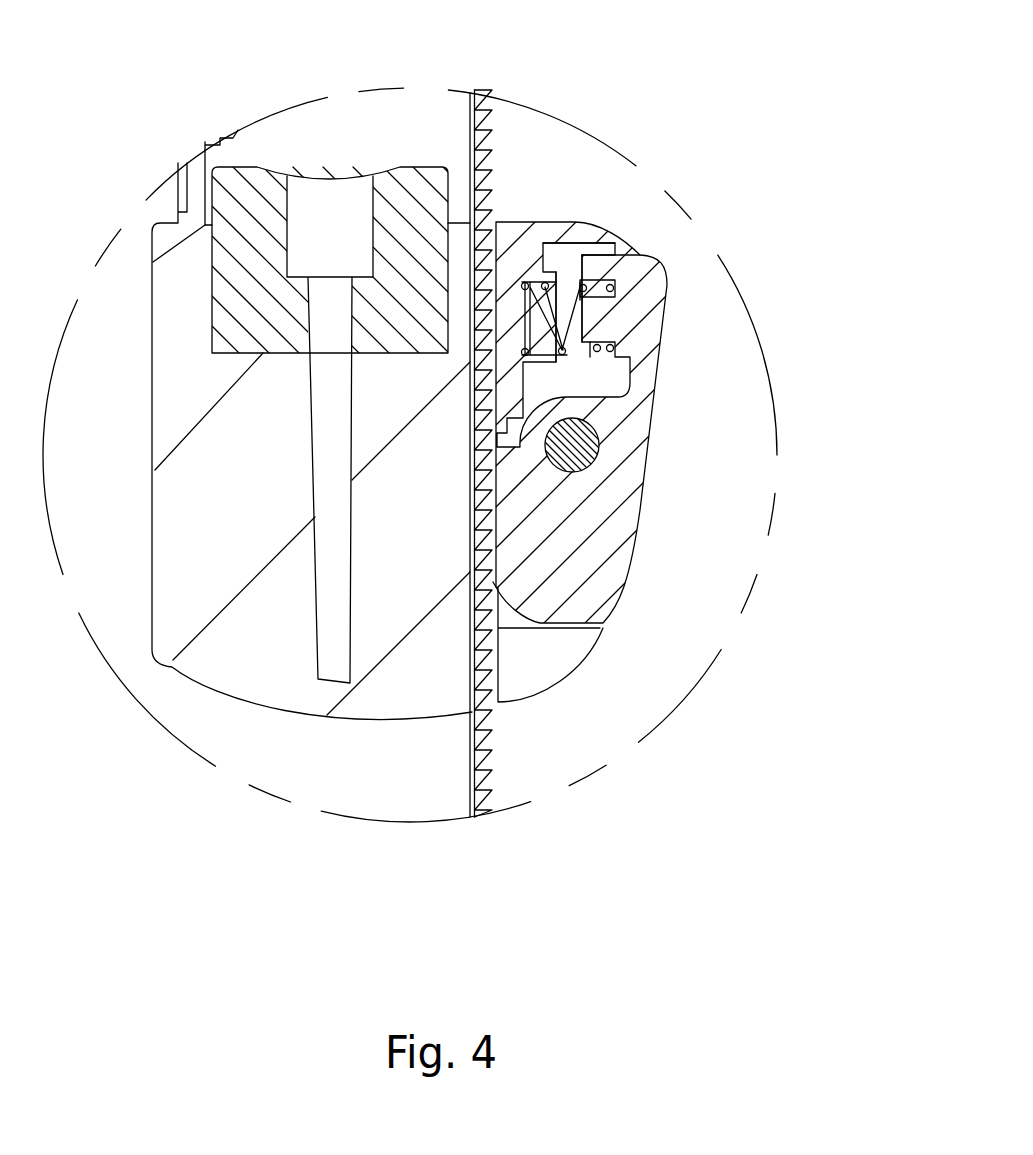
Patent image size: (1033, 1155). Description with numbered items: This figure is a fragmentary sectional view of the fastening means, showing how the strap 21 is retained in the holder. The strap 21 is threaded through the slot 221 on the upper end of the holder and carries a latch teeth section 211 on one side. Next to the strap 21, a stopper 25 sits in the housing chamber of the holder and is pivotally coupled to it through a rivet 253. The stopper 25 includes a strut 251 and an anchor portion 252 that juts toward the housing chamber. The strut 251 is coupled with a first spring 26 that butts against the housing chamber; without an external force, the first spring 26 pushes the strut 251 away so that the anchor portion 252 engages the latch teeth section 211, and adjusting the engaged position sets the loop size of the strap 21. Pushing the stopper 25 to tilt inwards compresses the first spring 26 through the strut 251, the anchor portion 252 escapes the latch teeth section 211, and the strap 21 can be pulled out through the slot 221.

The strap 21 is at (573, 484).
The latch teeth section 211 is at (483, 218).
The slot 221 is at (472, 255).
The stopper 25 is at (590, 563).
The strut 251 is at (597, 327).
The anchor portion 252 is at (477, 585).
The rivet 253 is at (578, 453).
The first spring 26 is at (572, 320).